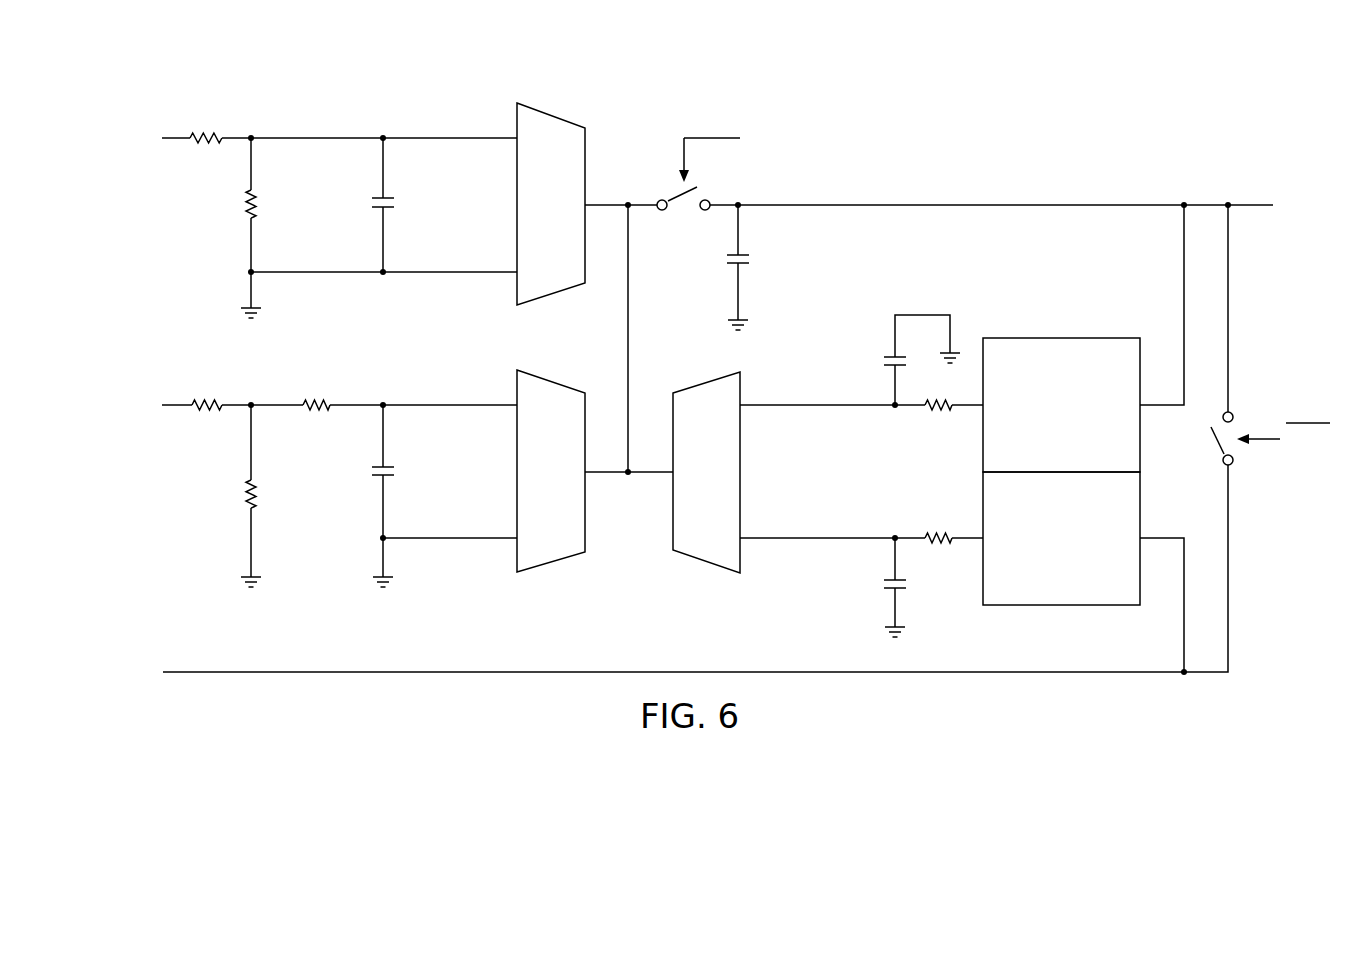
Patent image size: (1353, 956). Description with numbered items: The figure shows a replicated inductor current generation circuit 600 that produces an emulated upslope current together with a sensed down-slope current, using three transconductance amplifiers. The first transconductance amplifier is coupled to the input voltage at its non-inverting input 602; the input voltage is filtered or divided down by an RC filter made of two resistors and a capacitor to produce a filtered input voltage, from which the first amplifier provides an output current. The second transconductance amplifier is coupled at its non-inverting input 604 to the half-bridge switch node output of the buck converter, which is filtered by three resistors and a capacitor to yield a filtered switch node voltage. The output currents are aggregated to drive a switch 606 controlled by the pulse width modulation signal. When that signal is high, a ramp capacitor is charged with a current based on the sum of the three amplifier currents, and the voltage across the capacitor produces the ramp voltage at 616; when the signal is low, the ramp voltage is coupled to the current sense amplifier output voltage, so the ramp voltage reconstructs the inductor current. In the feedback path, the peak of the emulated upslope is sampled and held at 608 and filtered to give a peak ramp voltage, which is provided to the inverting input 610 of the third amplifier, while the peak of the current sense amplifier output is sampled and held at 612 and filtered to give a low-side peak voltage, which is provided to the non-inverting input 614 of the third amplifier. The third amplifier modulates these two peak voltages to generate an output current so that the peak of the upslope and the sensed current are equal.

The replicated inductor current generation circuit 600 is at (897, 70).
The non-inverting input 602 is at (472, 135).
The non-inverting input 604 is at (472, 403).
The switch 606 is at (665, 185).
The peak sample and hold 608 is at (1041, 448).
The inverting input 610 is at (815, 408).
The peak sample and hold 612 is at (1041, 582).
The non-inverting input 614 is at (815, 541).
The ramp voltage output 616 is at (973, 200).